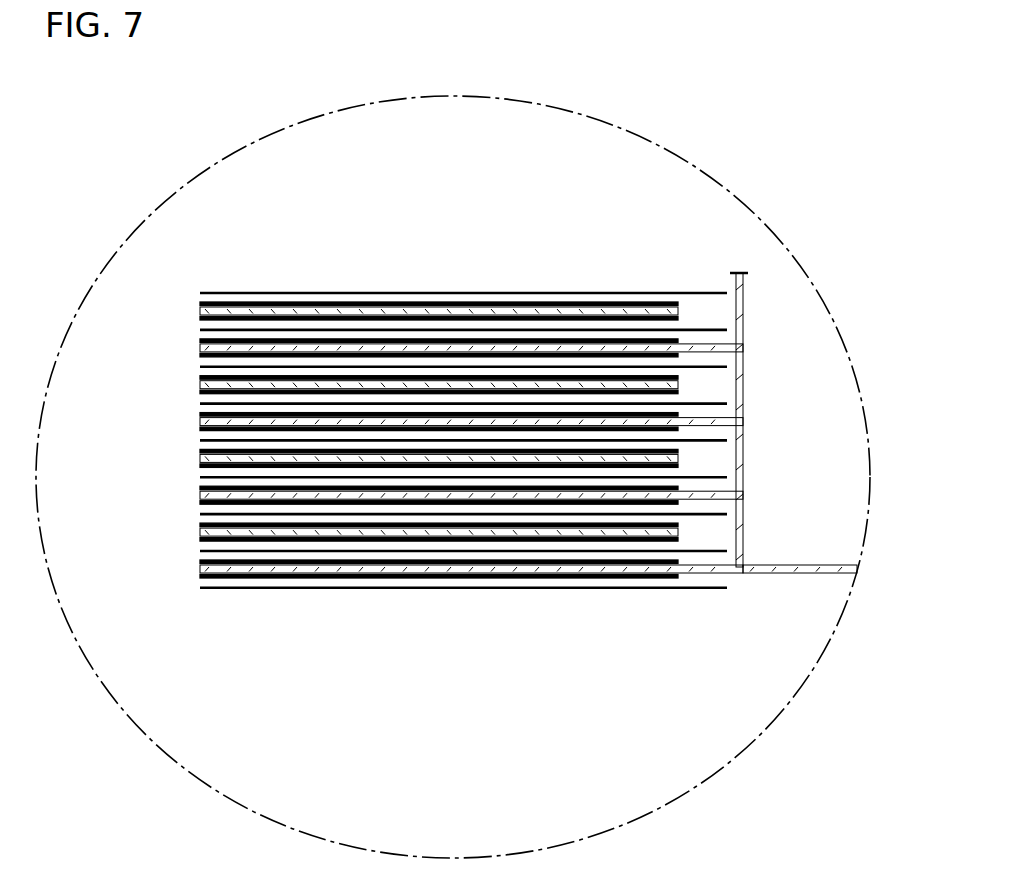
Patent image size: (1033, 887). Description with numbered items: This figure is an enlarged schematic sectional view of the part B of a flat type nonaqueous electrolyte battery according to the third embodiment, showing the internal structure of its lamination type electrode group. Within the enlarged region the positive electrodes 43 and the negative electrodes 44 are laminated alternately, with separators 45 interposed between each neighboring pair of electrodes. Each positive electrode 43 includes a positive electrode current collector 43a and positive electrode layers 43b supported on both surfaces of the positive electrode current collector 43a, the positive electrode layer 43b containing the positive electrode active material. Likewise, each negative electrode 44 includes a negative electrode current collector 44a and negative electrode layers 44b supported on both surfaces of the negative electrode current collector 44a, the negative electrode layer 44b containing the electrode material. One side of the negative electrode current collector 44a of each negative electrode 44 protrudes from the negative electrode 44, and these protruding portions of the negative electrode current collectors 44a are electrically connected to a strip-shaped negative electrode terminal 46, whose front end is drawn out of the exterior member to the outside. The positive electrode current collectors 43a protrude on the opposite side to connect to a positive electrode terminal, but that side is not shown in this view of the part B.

The positive electrode 43 is at (377, 445).
The positive electrode current collector 43a is at (203, 532).
The positive electrode layer 43b is at (203, 525).
The negative electrode 44 is at (463, 476).
The negative electrode current collector 44a is at (708, 347).
The negative electrode layer 44b is at (203, 562).
The separator 45 is at (535, 292).
The negative electrode terminal 46 is at (795, 574).
The part B is at (728, 762).